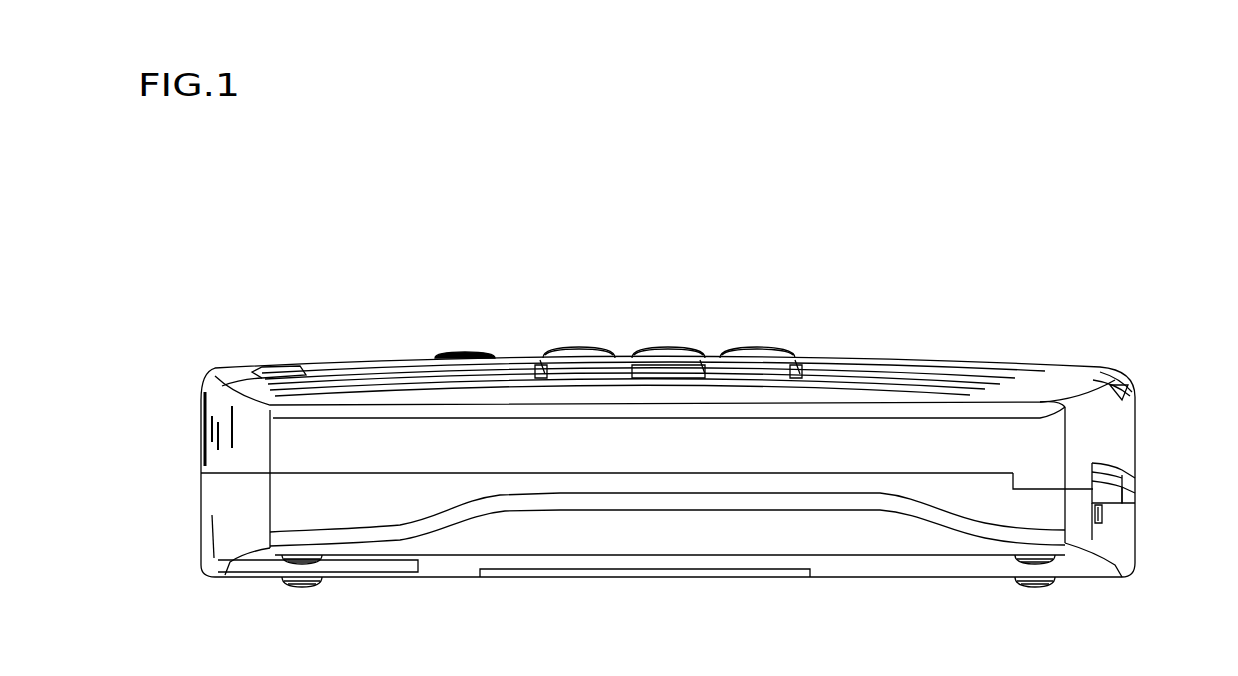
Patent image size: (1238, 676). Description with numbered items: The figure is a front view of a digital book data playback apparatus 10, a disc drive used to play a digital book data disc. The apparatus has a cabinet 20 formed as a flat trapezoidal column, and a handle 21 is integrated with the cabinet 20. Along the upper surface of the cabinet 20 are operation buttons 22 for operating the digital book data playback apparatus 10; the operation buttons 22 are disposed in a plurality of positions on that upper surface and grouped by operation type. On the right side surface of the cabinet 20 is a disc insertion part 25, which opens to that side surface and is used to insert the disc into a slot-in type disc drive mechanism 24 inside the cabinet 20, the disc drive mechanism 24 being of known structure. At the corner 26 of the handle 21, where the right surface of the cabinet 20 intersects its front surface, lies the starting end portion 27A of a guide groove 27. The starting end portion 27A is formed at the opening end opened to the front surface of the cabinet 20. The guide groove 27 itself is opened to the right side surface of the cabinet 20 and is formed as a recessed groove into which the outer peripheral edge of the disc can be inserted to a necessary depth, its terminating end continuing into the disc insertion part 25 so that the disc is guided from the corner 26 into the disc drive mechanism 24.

The digital book data playback apparatus 10 is at (960, 282).
The cabinet 20 is at (205, 488).
The handle 21 is at (403, 447).
The operation buttons 22 is at (465, 352).
The disc drive mechanism 24 is at (1120, 523).
The disc insertion part 25 is at (1108, 492).
The corner 26 is at (1053, 453).
The guide groove 27 is at (1053, 481).
The starting end portion 27A is at (1028, 478).